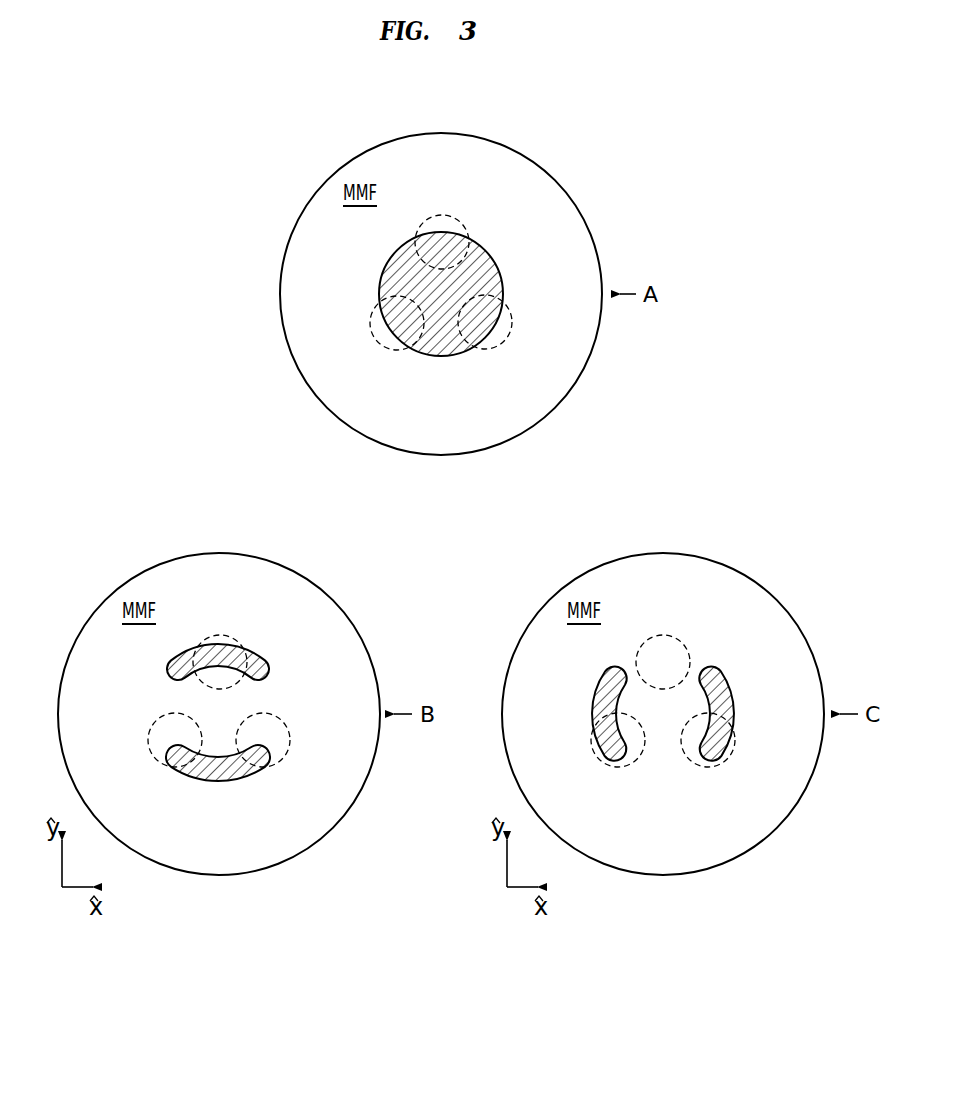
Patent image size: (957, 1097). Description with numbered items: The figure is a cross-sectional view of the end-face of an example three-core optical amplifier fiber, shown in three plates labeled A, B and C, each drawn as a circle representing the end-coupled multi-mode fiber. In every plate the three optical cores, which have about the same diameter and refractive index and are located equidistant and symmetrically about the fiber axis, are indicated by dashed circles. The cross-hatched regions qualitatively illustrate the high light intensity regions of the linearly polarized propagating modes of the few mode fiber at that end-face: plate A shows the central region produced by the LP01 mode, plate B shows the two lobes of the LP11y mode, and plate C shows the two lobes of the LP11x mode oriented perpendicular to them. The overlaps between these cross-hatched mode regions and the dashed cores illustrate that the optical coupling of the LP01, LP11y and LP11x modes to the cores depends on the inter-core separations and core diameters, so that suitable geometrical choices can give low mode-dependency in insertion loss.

The LP01 mode LP01 is at (497, 255).
The LP11y mode LP11y is at (266, 660).
The LP11x mode LP11x is at (740, 672).